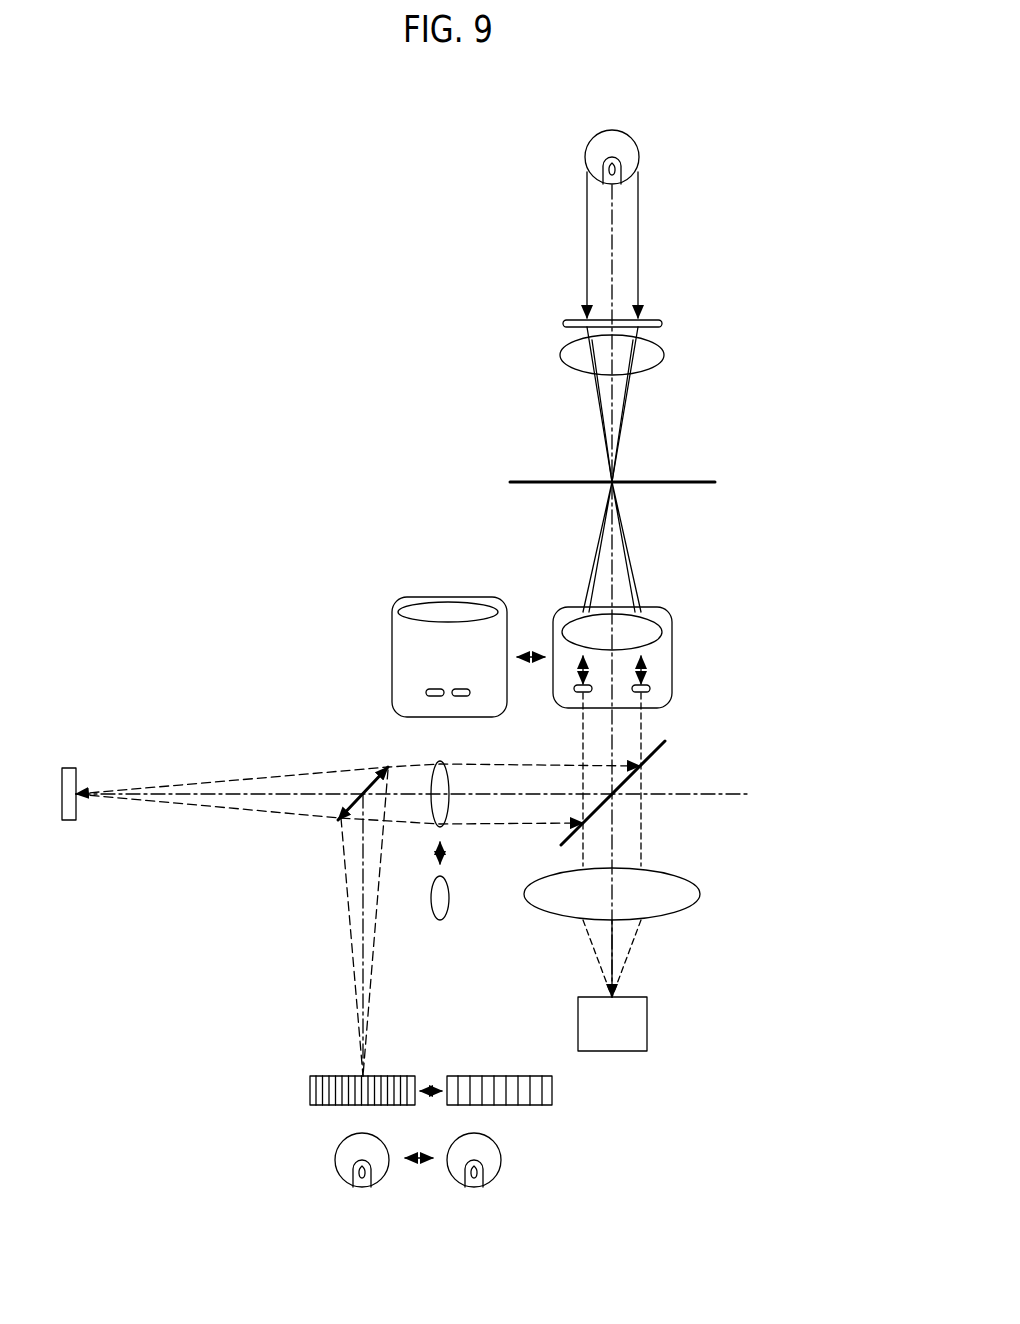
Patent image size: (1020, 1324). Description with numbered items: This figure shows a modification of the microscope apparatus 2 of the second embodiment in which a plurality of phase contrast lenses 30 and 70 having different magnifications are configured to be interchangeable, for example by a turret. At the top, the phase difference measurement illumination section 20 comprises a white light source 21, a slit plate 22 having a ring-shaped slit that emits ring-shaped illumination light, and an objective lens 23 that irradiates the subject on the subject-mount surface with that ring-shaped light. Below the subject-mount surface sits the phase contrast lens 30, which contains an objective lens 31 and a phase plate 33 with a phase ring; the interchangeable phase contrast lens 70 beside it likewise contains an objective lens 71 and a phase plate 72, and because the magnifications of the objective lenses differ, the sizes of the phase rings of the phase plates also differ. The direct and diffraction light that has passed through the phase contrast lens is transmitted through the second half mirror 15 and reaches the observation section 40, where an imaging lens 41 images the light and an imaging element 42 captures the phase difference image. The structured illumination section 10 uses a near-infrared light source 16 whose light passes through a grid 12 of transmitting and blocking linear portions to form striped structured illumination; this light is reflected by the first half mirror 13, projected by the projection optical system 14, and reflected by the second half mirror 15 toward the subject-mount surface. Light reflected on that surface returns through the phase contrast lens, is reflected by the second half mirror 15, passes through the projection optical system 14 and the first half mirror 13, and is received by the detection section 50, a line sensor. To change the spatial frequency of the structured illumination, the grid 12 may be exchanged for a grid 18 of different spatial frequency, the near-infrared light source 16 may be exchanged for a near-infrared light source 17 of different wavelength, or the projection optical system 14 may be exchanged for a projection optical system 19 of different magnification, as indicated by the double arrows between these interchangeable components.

The microscope apparatus 2 is at (274, 275).
The structured illumination section 10 is at (312, 946).
The grid 12 is at (310, 1091).
The first half mirror 13 is at (372, 772).
The projection optical system 14 is at (433, 812).
The second half mirror 15 is at (660, 740).
The near-infrared light source 16 is at (335, 1159).
The near-infrared light source 17 is at (501, 1160).
The grid 18 is at (552, 1090).
The projection optical system 19 is at (446, 912).
The phase difference measurement illumination section 20 is at (542, 239).
The white light source 21 is at (640, 152).
The slit plate 22 is at (563, 323).
The objective lens 23 is at (664, 355).
The phase contrast lens 30 is at (672, 627).
The objective lens 31 is at (652, 645).
The phase plate 33 is at (650, 688).
The observation section 40 is at (714, 952).
The imaging lens 41 is at (700, 893).
The imaging element 42 is at (647, 1028).
The detection section 50 is at (66, 768).
The phase contrast lens 70 is at (472, 597).
The objective lens 71 is at (412, 620).
The phase plate 72 is at (426, 693).